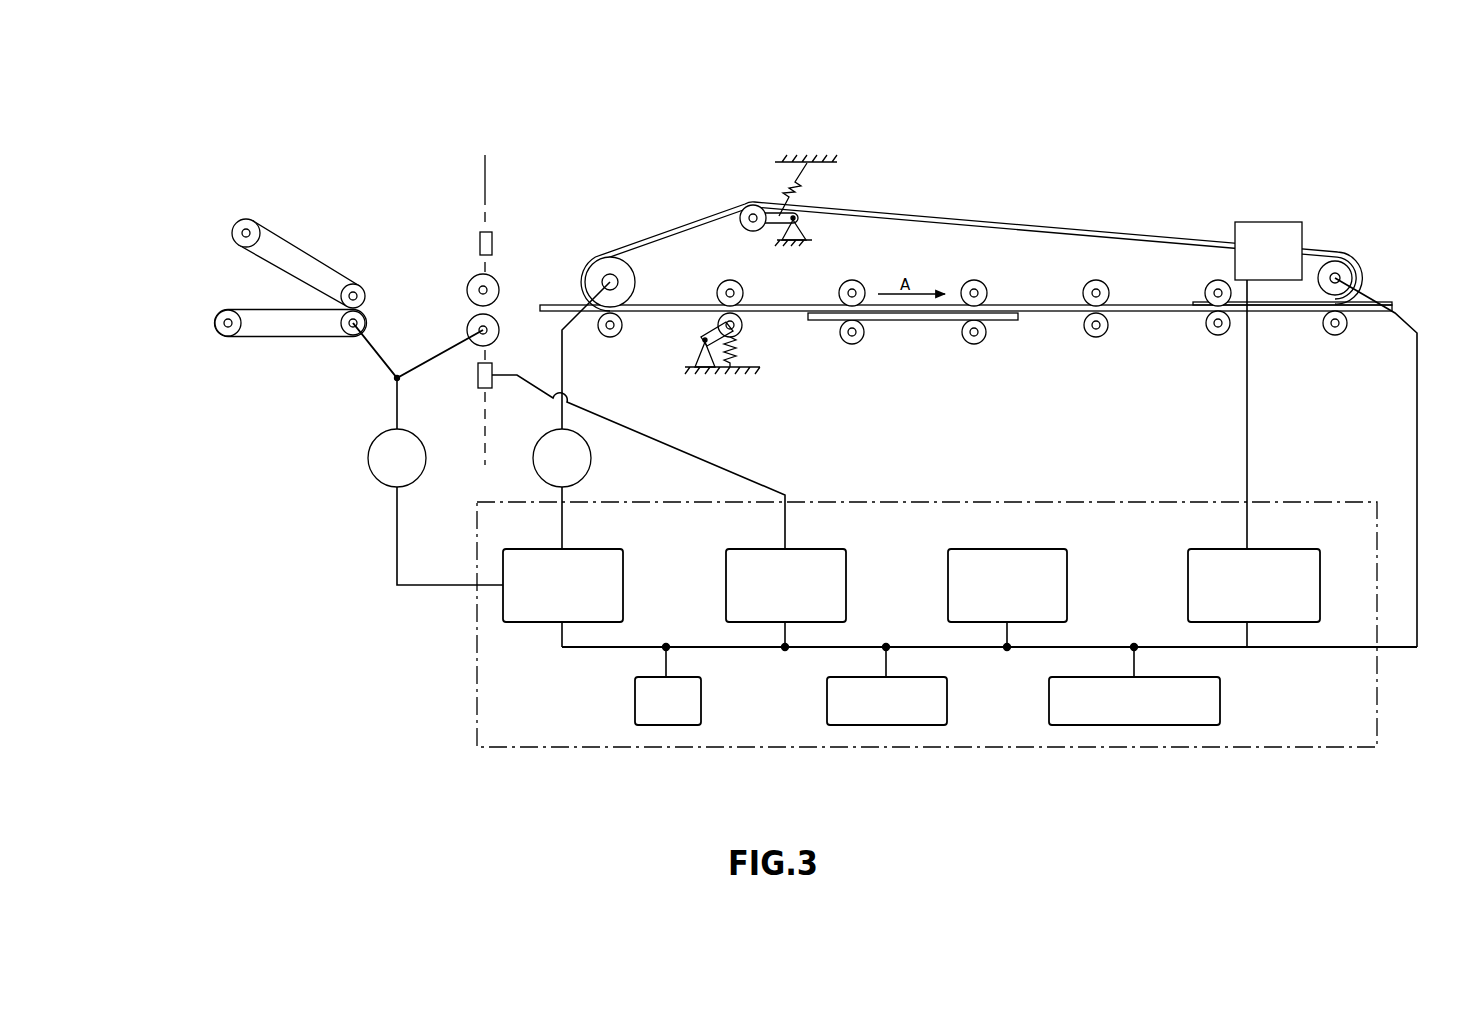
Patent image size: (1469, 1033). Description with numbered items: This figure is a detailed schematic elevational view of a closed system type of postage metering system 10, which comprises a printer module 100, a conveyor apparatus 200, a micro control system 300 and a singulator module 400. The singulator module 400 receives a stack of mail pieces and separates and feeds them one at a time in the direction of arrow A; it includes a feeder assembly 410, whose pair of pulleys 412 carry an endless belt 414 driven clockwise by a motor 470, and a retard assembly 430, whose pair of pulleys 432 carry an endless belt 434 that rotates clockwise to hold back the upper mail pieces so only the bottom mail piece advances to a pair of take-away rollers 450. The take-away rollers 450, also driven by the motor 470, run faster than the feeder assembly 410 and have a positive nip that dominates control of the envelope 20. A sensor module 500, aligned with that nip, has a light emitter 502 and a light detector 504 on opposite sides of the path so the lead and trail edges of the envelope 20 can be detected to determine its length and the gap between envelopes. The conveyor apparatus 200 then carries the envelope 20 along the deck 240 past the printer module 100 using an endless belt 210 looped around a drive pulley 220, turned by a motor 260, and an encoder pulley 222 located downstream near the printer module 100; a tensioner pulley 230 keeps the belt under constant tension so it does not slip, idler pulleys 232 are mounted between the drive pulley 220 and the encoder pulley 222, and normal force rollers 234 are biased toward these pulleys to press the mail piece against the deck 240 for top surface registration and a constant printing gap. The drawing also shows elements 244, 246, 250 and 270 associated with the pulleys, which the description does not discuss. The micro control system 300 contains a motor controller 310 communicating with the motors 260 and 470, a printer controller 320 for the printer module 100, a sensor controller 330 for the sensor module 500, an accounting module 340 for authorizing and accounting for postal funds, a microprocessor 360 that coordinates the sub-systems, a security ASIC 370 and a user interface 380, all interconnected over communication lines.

The postage metering system 10 is at (596, 95).
The envelope 20 is at (935, 322).
The printer module 100 is at (1268, 222).
The conveyor apparatus 200 is at (755, 140).
The endless belt 210 is at (1040, 229).
The drive pulley 220 is at (632, 258).
The encoder pulley 222 is at (1310, 267).
The tensioner pulley 230 is at (740, 217).
The idler pulleys 232 is at (742, 283).
The normal force rollers 234 is at (620, 334).
The deck 240 is at (565, 304).
The drive pulley shaft 244 is at (618, 284).
The idler pulley shaft 246 is at (1340, 272).
The encoder link 250 is at (1375, 305).
The motor 260 is at (592, 453).
The encoder 270 is at (1370, 262).
The micro control system 300 is at (985, 502).
The motor controller 310 is at (623, 572).
The printer controller 320 is at (1320, 572).
The sensor controller 330 is at (846, 572).
The accounting module 340 is at (1067, 572).
The microprocessor 360 is at (701, 698).
The security application specific integrated circuit (ASIC) 370 is at (947, 698).
The user interface 380 is at (1220, 698).
The singulator module 400 is at (157, 240).
The feeder assembly 410 is at (208, 328).
The pulleys 412 is at (222, 337).
The endless belt 414 is at (254, 308).
The retard assembly 430 is at (222, 220).
The pulleys 432 is at (260, 237).
The endless belt 434 is at (252, 266).
The take-away rollers 450 is at (466, 283).
The motor 470 is at (372, 440).
The sensor module 500 is at (510, 190).
The light emitter 502 is at (494, 238).
The light detector 504 is at (479, 388).